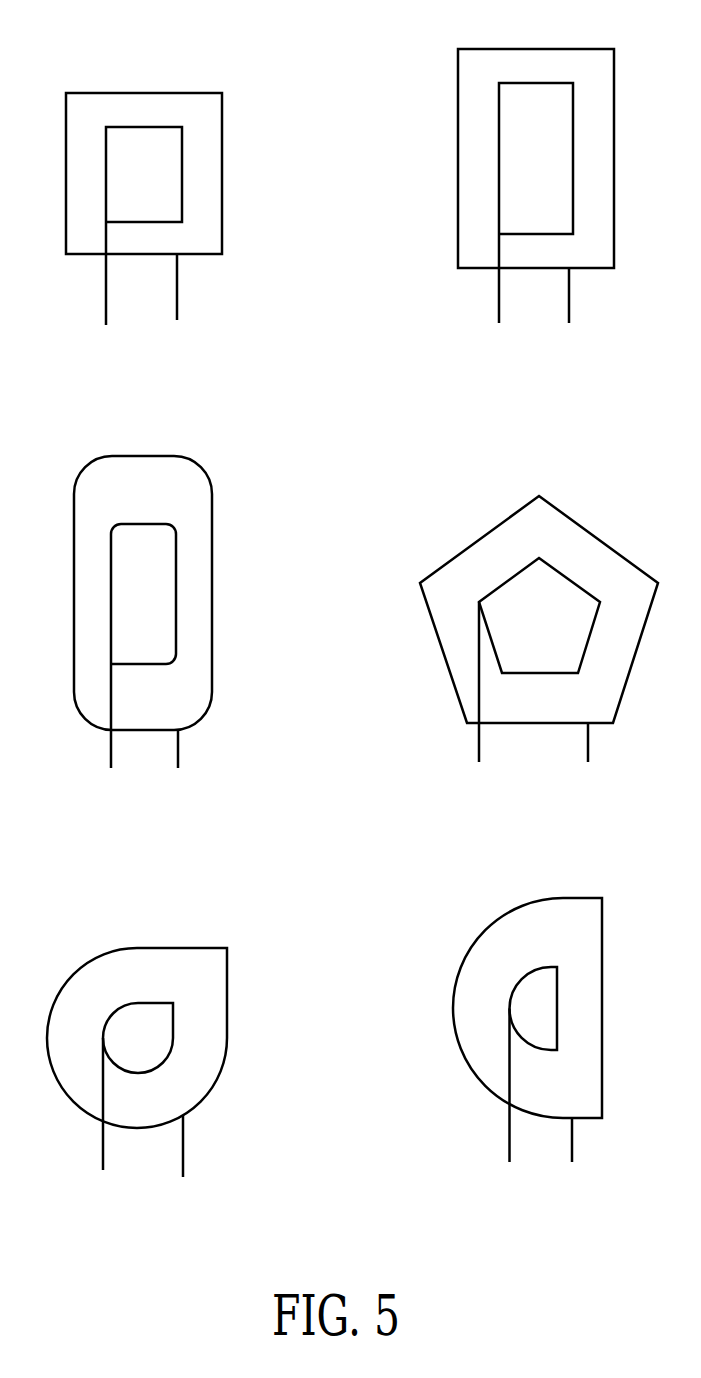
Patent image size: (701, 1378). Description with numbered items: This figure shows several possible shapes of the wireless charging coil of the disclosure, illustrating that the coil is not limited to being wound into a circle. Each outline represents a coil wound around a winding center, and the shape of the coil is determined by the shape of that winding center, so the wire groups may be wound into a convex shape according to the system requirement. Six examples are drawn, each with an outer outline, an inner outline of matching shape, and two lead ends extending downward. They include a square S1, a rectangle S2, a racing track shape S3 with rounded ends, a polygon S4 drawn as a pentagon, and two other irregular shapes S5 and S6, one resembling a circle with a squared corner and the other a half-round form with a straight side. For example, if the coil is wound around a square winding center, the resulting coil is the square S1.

The square S1 is at (144, 235).
The rectangle S2 is at (536, 217).
The racing track shape S3 is at (143, 635).
The polygon S4 is at (539, 656).
The irregular shape S5 is at (137, 1081).
The irregular shape S6 is at (527, 1057).